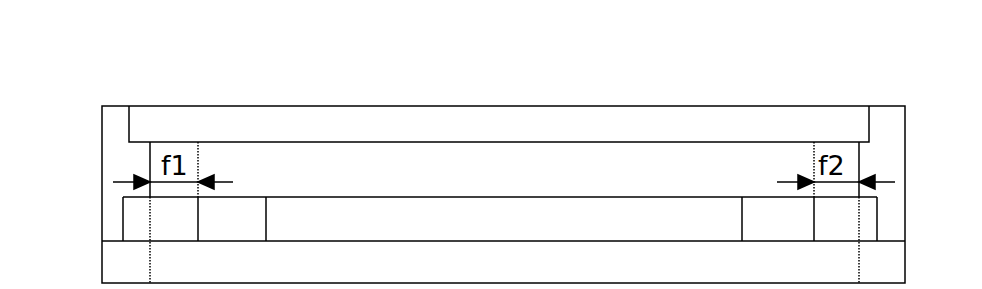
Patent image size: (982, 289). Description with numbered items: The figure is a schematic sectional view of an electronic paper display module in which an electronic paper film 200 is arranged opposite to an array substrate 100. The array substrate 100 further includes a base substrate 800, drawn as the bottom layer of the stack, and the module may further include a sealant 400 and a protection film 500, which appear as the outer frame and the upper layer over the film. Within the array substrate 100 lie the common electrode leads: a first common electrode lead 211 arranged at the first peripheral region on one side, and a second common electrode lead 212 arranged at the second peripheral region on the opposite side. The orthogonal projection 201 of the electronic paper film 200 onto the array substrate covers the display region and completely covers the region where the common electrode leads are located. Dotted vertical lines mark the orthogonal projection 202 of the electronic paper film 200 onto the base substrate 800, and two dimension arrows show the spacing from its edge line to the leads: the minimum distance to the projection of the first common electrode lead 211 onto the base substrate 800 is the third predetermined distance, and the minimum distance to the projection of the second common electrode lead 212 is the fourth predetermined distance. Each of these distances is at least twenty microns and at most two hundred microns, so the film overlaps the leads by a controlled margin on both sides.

The array substrate 100 is at (569, 230).
The electronic paper film 200 is at (348, 170).
The orthogonal projection of the electronic paper film onto the array substrate 201 is at (172, 224).
The orthogonal projection of the electronic paper film onto the base substrate 202 is at (307, 273).
The first common electrode lead 211 is at (245, 228).
The second common electrode lead 212 is at (763, 222).
The sealant 400 is at (116, 133).
The protection film 500 is at (656, 136).
The base substrate 800 is at (126, 272).